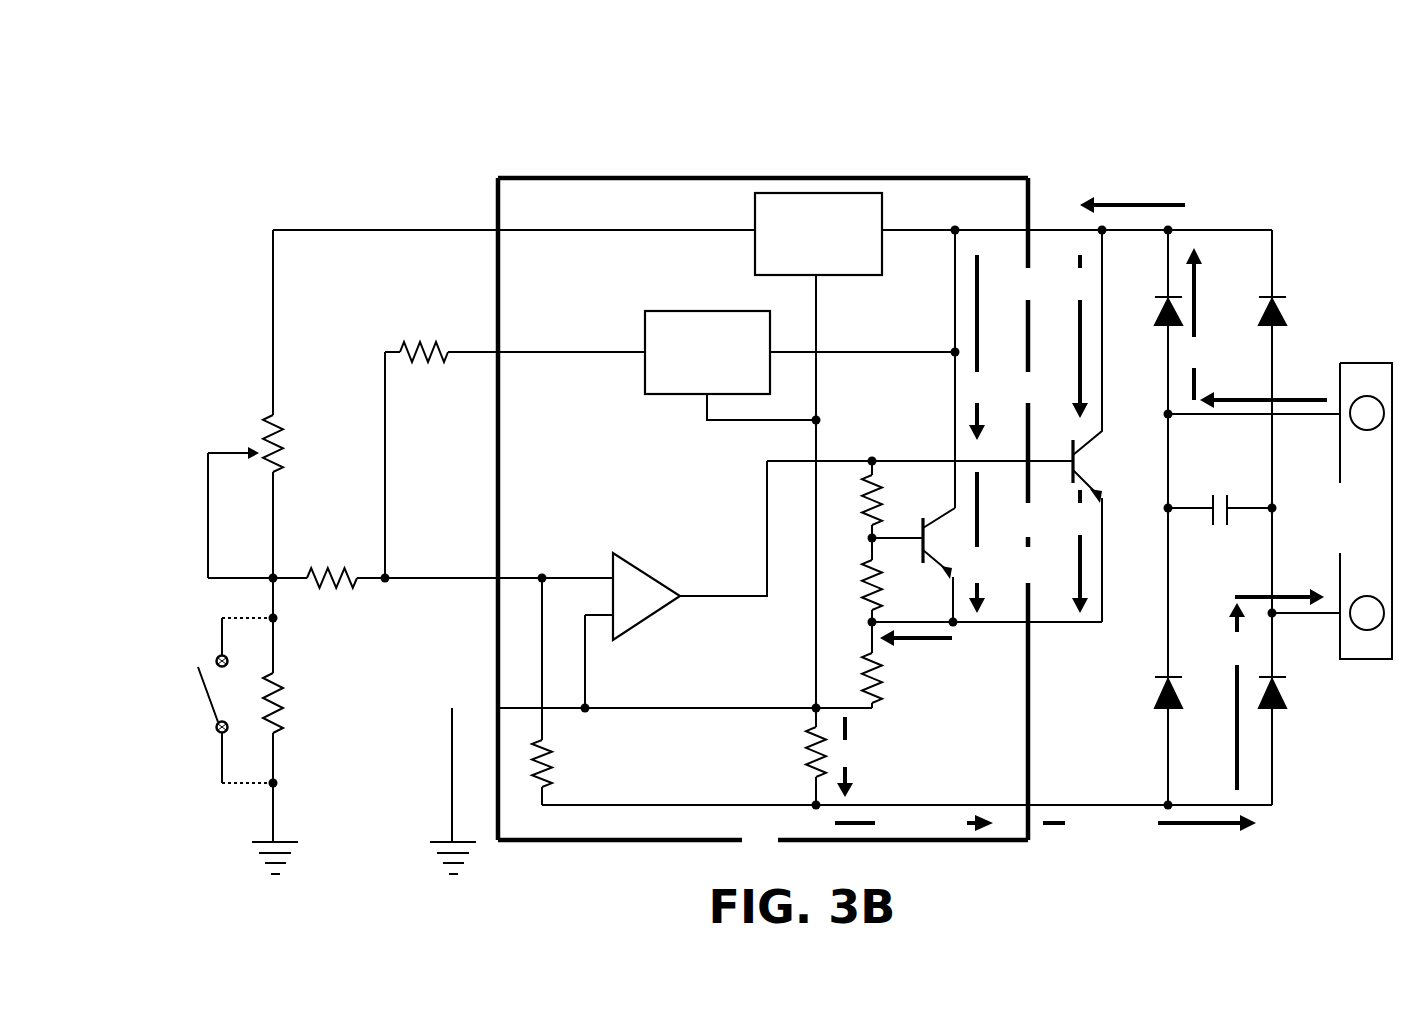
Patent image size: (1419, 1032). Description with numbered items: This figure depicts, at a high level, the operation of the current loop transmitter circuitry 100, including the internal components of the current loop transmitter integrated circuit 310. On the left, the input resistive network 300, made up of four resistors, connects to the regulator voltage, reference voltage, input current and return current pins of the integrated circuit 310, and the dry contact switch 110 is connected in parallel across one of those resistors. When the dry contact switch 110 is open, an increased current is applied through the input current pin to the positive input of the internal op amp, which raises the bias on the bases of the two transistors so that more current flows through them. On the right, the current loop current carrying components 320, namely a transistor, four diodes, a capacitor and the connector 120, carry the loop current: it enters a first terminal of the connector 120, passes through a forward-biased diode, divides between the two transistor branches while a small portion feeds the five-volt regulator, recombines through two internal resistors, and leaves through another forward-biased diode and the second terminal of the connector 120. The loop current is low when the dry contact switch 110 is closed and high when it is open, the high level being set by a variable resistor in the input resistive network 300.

The current loop transmitter circuitry 100 is at (760, 51).
The input resistive network 300 is at (372, 77).
The U1 310 is at (784, 177).
The current loop current carrying components 320 is at (1150, 70).
The dry contact switch 110 is at (221, 818).
The connector J1 120 is at (1366, 660).